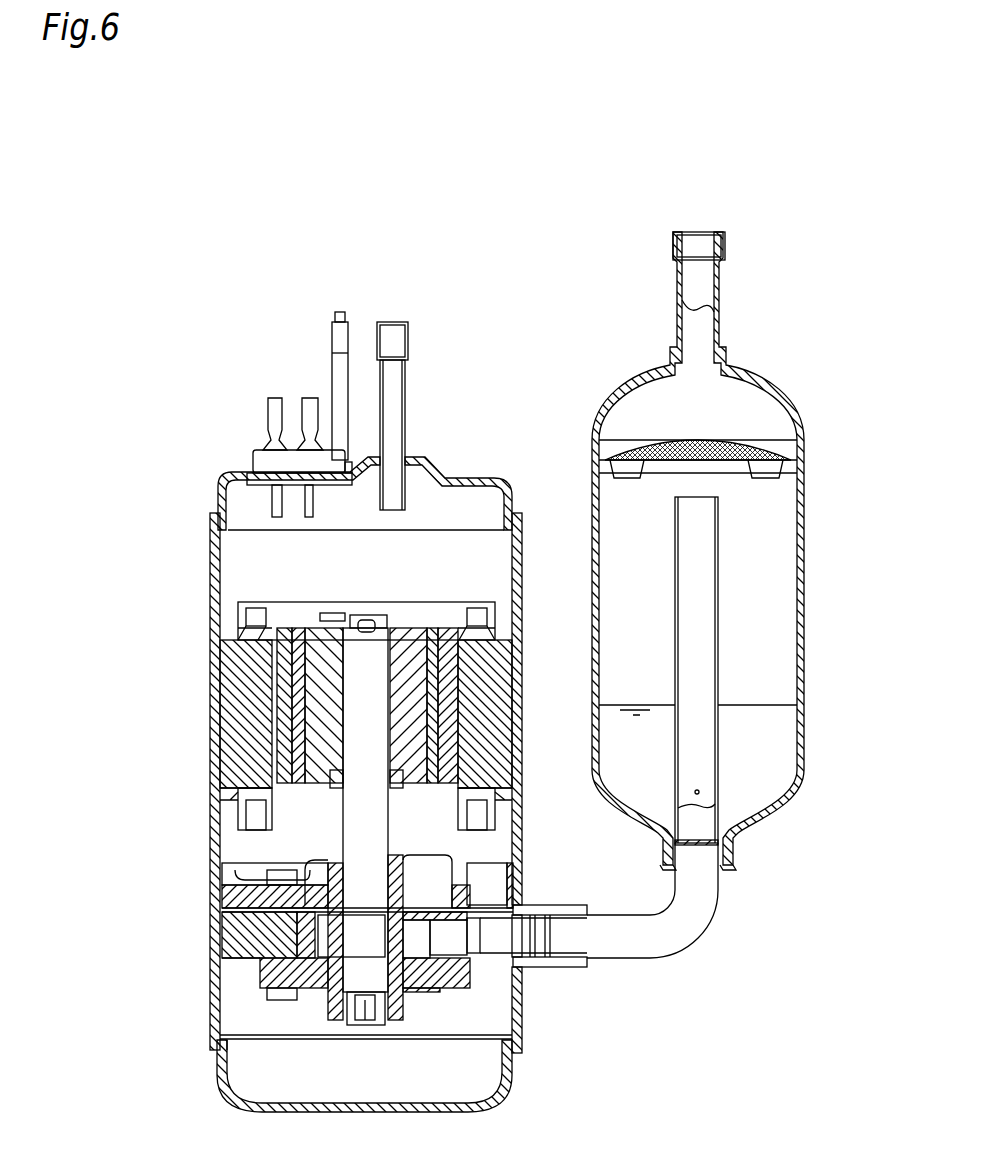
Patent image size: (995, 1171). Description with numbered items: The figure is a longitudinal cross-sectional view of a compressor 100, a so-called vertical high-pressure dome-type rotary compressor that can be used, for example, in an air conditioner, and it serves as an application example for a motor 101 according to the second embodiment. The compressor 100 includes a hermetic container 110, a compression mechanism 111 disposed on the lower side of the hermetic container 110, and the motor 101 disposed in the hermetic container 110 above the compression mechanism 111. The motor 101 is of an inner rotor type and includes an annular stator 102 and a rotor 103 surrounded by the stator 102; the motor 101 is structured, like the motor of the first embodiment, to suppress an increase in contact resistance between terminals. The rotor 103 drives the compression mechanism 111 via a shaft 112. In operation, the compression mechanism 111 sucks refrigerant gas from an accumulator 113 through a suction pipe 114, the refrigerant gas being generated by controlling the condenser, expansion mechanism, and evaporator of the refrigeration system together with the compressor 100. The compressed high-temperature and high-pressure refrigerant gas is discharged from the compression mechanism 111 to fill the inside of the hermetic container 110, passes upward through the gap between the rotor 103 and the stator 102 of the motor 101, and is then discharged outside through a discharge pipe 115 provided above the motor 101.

The compressor 100 is at (152, 202).
The motor 101 is at (202, 725).
The stator 102 is at (235, 678).
The rotor 103 is at (317, 645).
The hermetic container 110 is at (212, 975).
The compression mechanism 111 is at (237, 965).
The shaft 112 is at (357, 835).
The accumulator 113 is at (777, 393).
The suction pipe 114 is at (628, 948).
The discharge pipe 115 is at (398, 398).